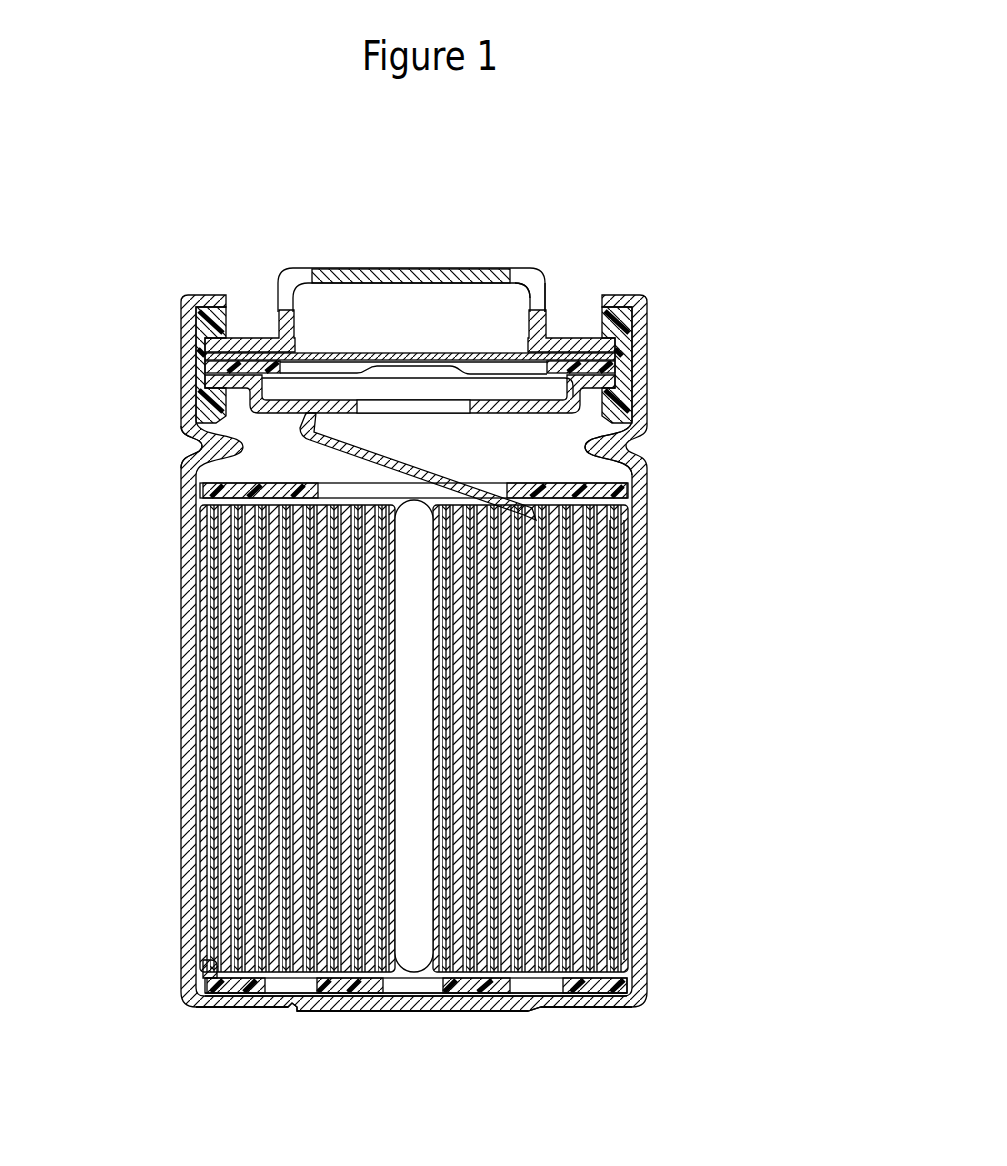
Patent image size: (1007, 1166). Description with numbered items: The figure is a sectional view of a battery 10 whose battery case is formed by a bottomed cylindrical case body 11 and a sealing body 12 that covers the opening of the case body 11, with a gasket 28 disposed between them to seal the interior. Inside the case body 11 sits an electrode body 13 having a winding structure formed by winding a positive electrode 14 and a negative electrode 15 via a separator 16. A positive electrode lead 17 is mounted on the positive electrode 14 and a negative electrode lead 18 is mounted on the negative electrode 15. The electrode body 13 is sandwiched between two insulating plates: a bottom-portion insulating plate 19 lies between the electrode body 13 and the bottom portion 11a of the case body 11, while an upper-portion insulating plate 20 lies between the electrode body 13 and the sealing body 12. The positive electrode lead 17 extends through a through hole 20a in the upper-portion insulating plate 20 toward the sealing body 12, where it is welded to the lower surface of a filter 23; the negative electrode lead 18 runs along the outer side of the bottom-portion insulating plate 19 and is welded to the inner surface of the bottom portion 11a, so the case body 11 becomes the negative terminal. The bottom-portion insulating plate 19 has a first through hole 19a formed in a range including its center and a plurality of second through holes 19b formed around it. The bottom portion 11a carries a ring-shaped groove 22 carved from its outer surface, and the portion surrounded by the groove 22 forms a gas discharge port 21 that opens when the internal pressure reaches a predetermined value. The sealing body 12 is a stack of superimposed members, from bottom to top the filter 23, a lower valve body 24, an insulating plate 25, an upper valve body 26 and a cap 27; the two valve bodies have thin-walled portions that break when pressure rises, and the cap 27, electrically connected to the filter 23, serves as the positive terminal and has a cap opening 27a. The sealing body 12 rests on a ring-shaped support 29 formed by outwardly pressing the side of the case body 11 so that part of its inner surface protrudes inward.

The battery 10 is at (644, 152).
The case body 11 is at (648, 301).
The bottom portion 11a is at (612, 1010).
The sealing body 12 is at (540, 273).
The electrode body 13 is at (730, 750).
The positive electrode 14 is at (598, 770).
The negative electrode 15 is at (612, 799).
The separator 16 is at (627, 822).
The positive electrode lead 17 is at (233, 441).
The negative electrode lead 18 is at (207, 985).
The bottom-portion insulating plate 19 is at (630, 990).
The first through hole 19a is at (440, 1012).
The second through holes 19b is at (318, 1012).
The upper-portion insulating plate 20 is at (628, 490).
The through hole 20a is at (585, 455).
The gas discharge port 21 is at (415, 1012).
The groove 22 is at (292, 1012).
The filter 23 is at (590, 441).
The lower valve body 24 is at (312, 374).
The insulating plate 25 is at (258, 360).
The upper valve body 26 is at (347, 374).
The cap 27 is at (480, 266).
The cap opening 27a is at (540, 292).
The gasket 28 is at (625, 332).
The support 29 is at (223, 454).